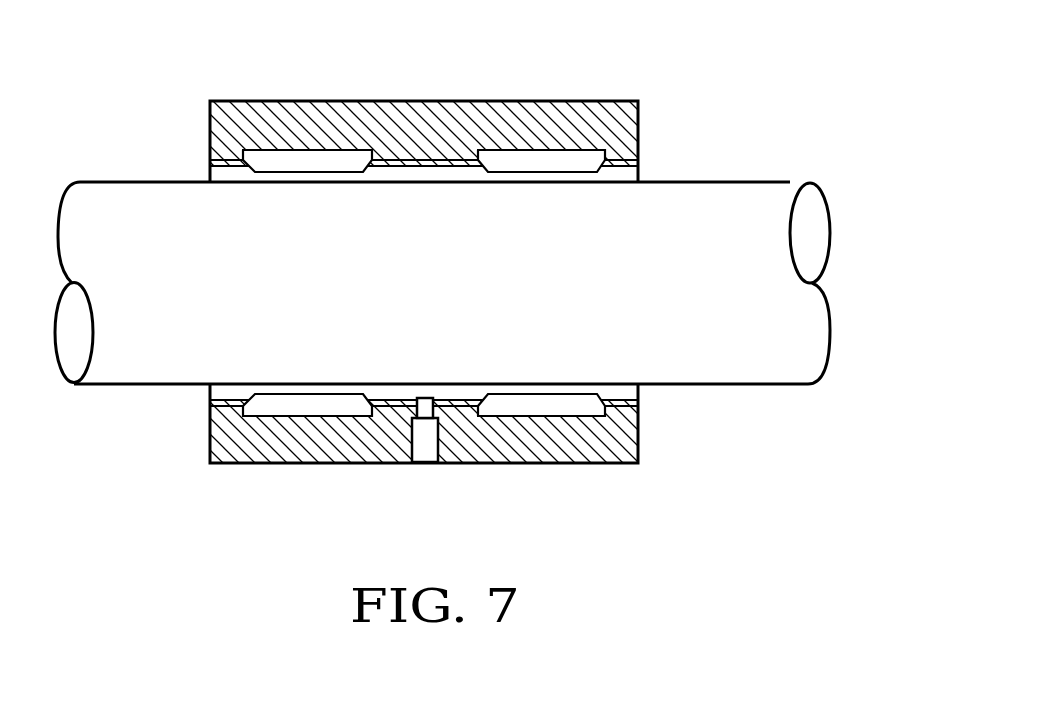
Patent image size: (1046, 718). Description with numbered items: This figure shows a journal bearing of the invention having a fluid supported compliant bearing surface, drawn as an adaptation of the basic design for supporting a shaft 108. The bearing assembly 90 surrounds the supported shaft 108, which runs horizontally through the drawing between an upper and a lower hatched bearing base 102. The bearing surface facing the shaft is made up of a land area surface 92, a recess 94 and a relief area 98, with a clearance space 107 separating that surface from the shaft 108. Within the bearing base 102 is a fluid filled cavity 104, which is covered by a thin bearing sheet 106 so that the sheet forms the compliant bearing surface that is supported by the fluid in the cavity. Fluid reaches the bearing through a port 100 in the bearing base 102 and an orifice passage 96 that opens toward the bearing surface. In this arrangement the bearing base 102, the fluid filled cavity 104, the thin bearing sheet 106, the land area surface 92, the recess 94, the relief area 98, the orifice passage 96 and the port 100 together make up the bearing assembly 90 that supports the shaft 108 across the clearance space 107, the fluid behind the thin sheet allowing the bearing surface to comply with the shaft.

The bearing assembly 90 is at (675, 115).
The land area surface 92 is at (545, 398).
The recess 94 is at (468, 398).
The orifice passage 96 is at (427, 398).
The relief area 98 is at (612, 398).
The port 100 is at (422, 452).
The bearing base 102 is at (610, 442).
The fluid filled cavity 104 is at (563, 410).
The thin bearing sheet 106 is at (277, 398).
The clearance space 107 is at (335, 391).
The shaft 108 is at (747, 335).